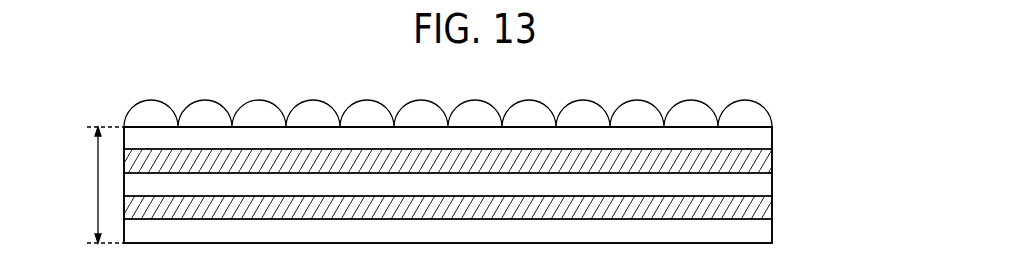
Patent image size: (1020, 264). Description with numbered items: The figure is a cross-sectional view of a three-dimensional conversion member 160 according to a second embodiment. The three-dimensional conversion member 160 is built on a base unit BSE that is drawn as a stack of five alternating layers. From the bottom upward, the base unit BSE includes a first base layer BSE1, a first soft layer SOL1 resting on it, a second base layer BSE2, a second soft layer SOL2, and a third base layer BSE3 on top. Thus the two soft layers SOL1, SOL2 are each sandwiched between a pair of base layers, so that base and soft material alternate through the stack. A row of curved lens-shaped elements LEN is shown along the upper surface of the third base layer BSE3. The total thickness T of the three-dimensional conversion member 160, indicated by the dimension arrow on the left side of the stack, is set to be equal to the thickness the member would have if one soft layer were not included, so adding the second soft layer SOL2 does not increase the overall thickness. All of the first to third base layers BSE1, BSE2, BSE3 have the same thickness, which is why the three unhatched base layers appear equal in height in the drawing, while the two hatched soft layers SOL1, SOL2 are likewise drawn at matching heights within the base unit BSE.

The 3D conversion member 160 is at (72, 100).
The total thickness T is at (104, 185).
The lens layer LEN is at (772, 113).
The third base layer BSE3 is at (773, 140).
The second soft layer SOL2 is at (773, 163).
The second base layer BSE2 is at (773, 188).
The first soft layer SOL1 is at (773, 210).
The first base layer BSE1 is at (773, 233).
The base unit BSE is at (866, 133).